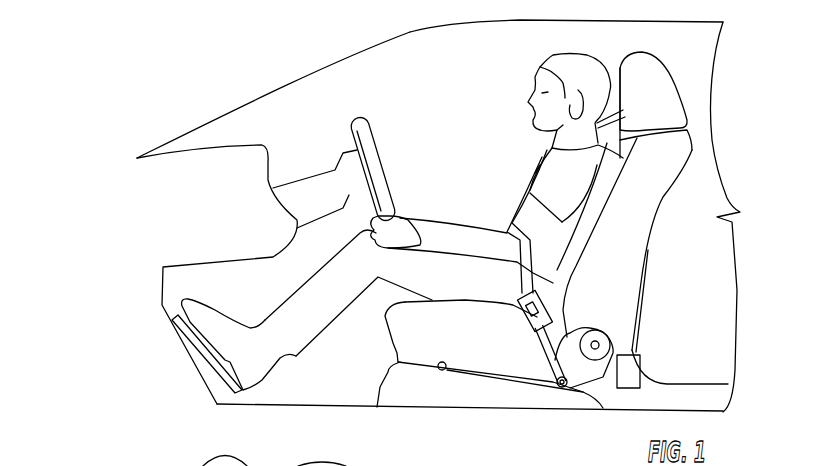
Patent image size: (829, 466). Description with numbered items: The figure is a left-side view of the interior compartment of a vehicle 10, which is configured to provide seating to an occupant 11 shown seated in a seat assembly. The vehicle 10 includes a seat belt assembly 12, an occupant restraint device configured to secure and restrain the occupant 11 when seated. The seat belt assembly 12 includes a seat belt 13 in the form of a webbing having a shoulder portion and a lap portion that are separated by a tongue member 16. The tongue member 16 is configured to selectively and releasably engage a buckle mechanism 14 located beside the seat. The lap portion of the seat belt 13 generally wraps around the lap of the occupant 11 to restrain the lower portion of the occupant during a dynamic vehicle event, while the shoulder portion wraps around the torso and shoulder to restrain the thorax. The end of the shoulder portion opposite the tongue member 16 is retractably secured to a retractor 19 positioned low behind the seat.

The vehicle 10 is at (208, 58).
The occupant 11 is at (482, 240).
The seat belt assembly 12 is at (516, 154).
The seat belt 13 is at (632, 350).
The buckle mechanism 14 is at (530, 322).
The tongue member 16 is at (518, 298).
The retractor 19 is at (630, 378).